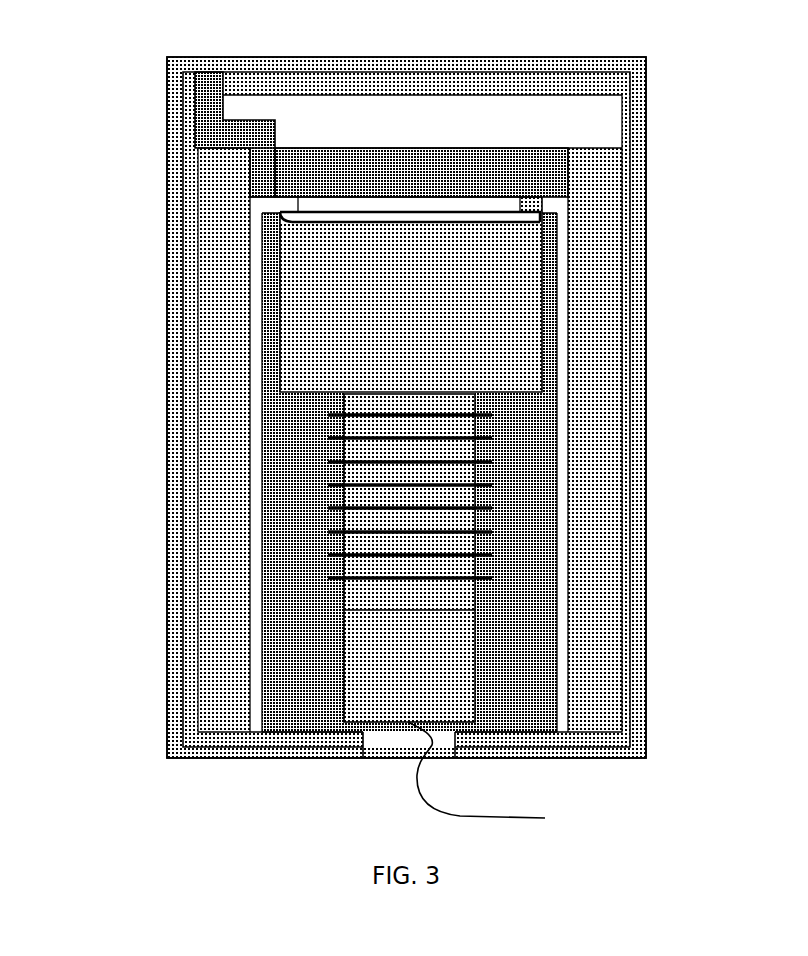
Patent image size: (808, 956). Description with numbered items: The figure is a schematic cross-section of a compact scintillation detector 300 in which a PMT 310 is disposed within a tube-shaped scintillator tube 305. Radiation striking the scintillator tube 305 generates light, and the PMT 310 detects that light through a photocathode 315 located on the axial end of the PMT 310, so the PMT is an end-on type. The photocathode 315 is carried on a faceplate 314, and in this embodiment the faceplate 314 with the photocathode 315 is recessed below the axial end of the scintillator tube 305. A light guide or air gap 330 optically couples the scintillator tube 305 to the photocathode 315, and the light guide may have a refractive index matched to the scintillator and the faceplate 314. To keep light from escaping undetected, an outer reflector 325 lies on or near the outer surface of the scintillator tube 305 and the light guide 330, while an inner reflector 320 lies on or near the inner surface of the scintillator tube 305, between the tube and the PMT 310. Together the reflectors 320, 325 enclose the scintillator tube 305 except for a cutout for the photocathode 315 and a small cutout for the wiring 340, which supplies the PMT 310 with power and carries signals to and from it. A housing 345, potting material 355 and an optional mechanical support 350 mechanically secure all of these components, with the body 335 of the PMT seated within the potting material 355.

The scintillation detector 300 is at (671, 60).
The scintillator tube 305 is at (605, 483).
The PMT 310 is at (420, 305).
The faceplate 314 is at (500, 216).
The photocathode 315 is at (433, 225).
The inner reflector 320 is at (560, 242).
The outer reflector 325 is at (493, 85).
The light guide 330 is at (412, 125).
The electrode rod with coil 335 is at (440, 640).
The wiring 340 is at (455, 810).
The housing 345 is at (648, 600).
The mechanical support 350 is at (207, 133).
The potting material 355 is at (532, 573).